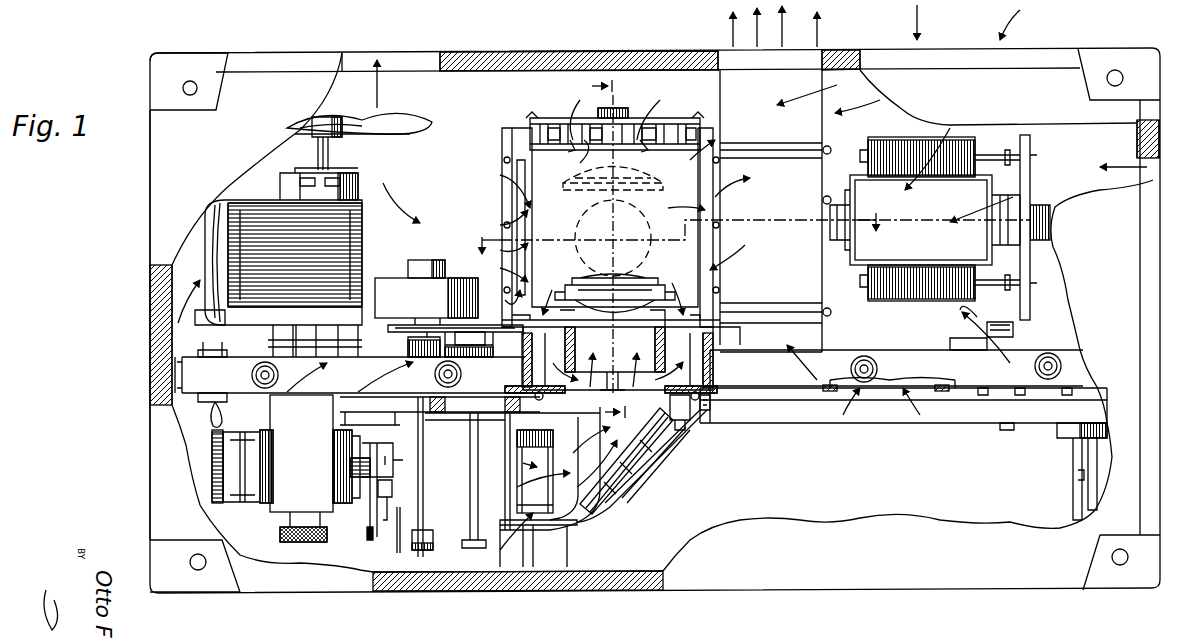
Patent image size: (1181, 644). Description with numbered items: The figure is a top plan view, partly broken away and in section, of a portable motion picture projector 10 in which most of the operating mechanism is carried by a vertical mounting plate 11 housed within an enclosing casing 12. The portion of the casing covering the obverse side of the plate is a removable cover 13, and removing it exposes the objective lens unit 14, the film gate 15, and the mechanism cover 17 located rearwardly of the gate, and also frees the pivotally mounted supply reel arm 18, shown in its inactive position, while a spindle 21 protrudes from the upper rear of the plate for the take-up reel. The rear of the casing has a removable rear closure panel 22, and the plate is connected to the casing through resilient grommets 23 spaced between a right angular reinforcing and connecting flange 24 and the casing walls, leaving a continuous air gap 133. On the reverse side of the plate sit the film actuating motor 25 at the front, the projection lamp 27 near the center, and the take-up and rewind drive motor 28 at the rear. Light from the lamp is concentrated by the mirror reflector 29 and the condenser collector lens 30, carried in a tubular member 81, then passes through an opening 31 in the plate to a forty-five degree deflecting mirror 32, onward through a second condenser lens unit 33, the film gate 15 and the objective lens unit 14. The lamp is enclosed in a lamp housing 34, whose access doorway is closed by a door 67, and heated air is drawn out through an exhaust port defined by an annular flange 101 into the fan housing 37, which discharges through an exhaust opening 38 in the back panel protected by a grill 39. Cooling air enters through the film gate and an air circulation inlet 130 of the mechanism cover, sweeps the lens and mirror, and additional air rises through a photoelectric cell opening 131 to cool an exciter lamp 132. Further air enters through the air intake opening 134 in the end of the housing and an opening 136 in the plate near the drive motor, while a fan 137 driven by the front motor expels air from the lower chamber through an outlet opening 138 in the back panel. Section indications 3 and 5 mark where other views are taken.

The portable motion picture projector 10 is at (300, 607).
The mounting plate 11 is at (182, 395).
The casing 12 is at (186, 290).
The removable cover 13 is at (173, 473).
The objective lens unit 14 is at (267, 510).
The film gate 15 is at (358, 513).
The mechanism cover 17 is at (668, 465).
The supply reel arm 18 is at (875, 413).
The spindle 21 is at (1095, 462).
The rear closure panel 22 is at (1053, 62).
The resilient grommets 23 is at (462, 374).
The reinforcing and connecting flange 24 is at (912, 352).
The film actuating motor 25 is at (348, 250).
The projection lamp 27 is at (579, 231).
The take-up and rewind drive motor 28 is at (915, 157).
The mirror reflector 29 is at (652, 179).
The condenser collector lens 30 is at (590, 322).
The opening 31 is at (656, 388).
The deflecting mirror 32 is at (615, 492).
The second condenser lens unit 33 is at (478, 526).
The lamp housing 34 is at (497, 182).
The fan housing 37 is at (742, 90).
The exhaust opening 38 is at (810, 58).
The grill 39 is at (728, 47).
The door 67 is at (556, 125).
The tubular member 81 is at (660, 330).
The annular flange 101 is at (728, 333).
The air circulation inlet 130 is at (418, 470).
The photoelectric cell opening 131 is at (575, 510).
The exciter lamp 132 is at (520, 545).
The air gap 133 is at (192, 312).
The air intake opening 134 is at (1148, 193).
The opening 136 is at (927, 388).
The fan 137 is at (352, 128).
The outlet opening 138 is at (410, 62).
The section line 3 is at (765, 249).
The section line 5 is at (628, 285).